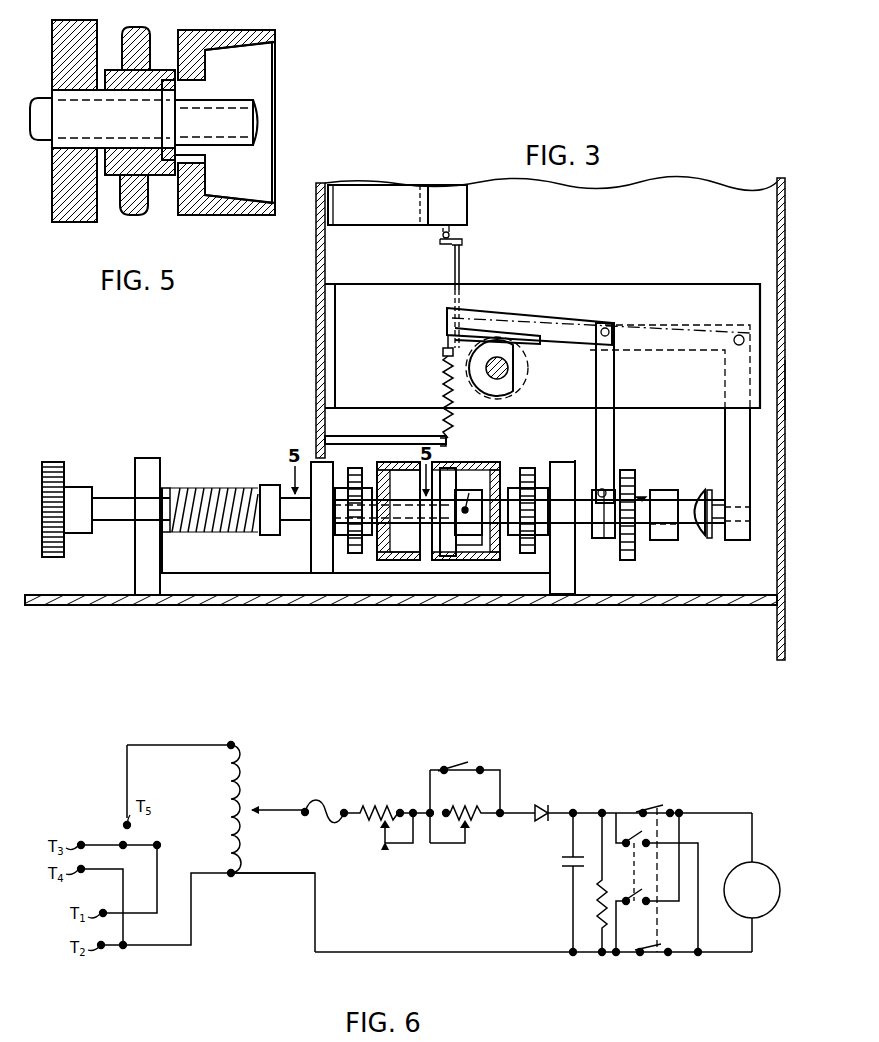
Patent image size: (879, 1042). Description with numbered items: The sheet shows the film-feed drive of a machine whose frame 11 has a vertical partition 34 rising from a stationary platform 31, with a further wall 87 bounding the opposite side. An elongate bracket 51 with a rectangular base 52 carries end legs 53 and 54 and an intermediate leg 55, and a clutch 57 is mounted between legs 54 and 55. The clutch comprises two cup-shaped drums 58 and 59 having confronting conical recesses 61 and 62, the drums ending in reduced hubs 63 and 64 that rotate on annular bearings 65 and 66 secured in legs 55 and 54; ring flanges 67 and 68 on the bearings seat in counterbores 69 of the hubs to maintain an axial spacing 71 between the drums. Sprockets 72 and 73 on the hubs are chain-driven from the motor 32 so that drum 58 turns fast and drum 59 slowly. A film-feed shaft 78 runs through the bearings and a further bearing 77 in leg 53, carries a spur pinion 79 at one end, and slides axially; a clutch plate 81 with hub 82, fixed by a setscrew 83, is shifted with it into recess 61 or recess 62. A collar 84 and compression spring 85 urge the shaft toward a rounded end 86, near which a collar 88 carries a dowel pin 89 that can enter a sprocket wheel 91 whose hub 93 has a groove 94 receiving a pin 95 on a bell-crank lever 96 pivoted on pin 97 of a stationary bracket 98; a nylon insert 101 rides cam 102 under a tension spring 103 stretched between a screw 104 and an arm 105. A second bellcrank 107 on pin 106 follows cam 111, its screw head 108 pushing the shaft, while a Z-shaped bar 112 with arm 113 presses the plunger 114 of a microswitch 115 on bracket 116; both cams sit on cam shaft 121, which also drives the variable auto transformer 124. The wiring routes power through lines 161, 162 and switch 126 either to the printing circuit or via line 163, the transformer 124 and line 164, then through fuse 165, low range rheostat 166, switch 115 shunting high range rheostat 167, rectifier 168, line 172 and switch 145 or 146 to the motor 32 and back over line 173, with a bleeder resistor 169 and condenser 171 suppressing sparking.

In FIG. 3, the frame 11 is at (784, 386).
In FIG. 3, the shelf or platform 31 is at (345, 606).
In FIG. 6, the electric motor 32 is at (769, 872).
In FIG. 3, the wall or partition 34 is at (316, 286).
In FIG. 3, the bracket 51 is at (132, 575).
In FIG. 3, the base 52 is at (188, 598).
In FIG. 3, the leg 53 is at (136, 550).
In FIG. 3, the leg 54 is at (575, 573).
In FIG. 5, the leg 55 is at (94, 210).
In FIG. 3, the leg 55 is at (312, 557).
In FIG. 3, the clutch 57 is at (456, 452).
In FIG. 5, the drum member 58 is at (255, 30).
In FIG. 3, the drum member 58 is at (394, 462).
In FIG. 3, the drum member 59 is at (488, 456).
In FIG. 5, the conical recess 61 is at (258, 88).
In FIG. 3, the conical recess 61 is at (406, 546).
In FIG. 3, the conical recess 62 is at (472, 540).
In FIG. 5, the hub portion 63 is at (112, 60).
In FIG. 3, the hub portion 63 is at (354, 470).
In FIG. 3, the hub portion 64 is at (522, 468).
In FIG. 5, the annular bearing 65 is at (102, 131).
In FIG. 3, the annular bearing 65 is at (322, 528).
In FIG. 3, the annular bearing 66 is at (564, 475).
In FIG. 5, the ring flange 67 is at (170, 115).
In FIG. 3, the ring flange 67 is at (366, 531).
In FIG. 3, the ring flange 68 is at (501, 537).
In FIG. 5, the annular recess or counterbore 69 is at (190, 163).
In FIG. 3, the axial spacing 71 is at (447, 557).
In FIG. 5, the sprocket 72 is at (144, 212).
In FIG. 3, the sprocket 72 is at (366, 468).
In FIG. 3, the sprocket 73 is at (540, 470).
In FIG. 3, the bearing 77 is at (147, 494).
In FIG. 3, the film-feed shaft 78 is at (110, 497).
In FIG. 3, the spur pinion 79 is at (58, 470).
In FIG. 3, the friction disk or clutch plate 81 is at (466, 546).
In FIG. 3, the hub portion 82 is at (485, 536).
In FIG. 3, the setscrew 83 is at (470, 493).
In FIG. 3, the collar 84 is at (272, 485).
In FIG. 3, the compression spring 85 is at (208, 488).
In FIG. 3, the rounded end or head 86 is at (700, 536).
In FIG. 3, the housing wall 87 is at (785, 322).
In FIG. 3, the collar 88 is at (666, 540).
In FIG. 3, the dowel pin 89 is at (646, 497).
In FIG. 3, the sprocket wheel 91 is at (632, 478).
In FIG. 3, the hub 93 is at (628, 556).
In FIG. 3, the circumferential groove 94 is at (602, 538).
In FIG. 3, the pin 95 is at (604, 488).
In FIG. 3, the bell-crank lever 96 is at (615, 384).
In FIG. 3, the pin 97 is at (606, 327).
In FIG. 3, the bracket 98 is at (658, 285).
In FIG. 3, the nylon insert 101 is at (515, 326).
In FIG. 3, the cam 102 is at (519, 395).
In FIG. 3, the tension spring 103 is at (443, 380).
In FIG. 3, the screw 104 is at (442, 350).
In FIG. 3, the arm 105 is at (350, 436).
In FIG. 3, the pin 106 is at (739, 334).
In FIG. 3, the bellcrank lever 107 is at (725, 436).
In FIG. 3, the screw head 108 is at (710, 490).
In FIG. 3, the cam 111 is at (528, 360).
In FIG. 3, the switch actuating bar 112 is at (460, 268).
In FIG. 3, the arm 113 is at (462, 241).
In FIG. 3, the plunger 114 is at (443, 235).
In FIG. 3, the microswitch 115 is at (467, 208).
In FIG. 6, the microswitch 115 is at (466, 770).
In FIG. 3, the bracket 116 is at (358, 219).
In FIG. 3, the cam shaft 121 is at (508, 370).
In FIG. 6, the variable auto transformer 124 is at (250, 778).
In FIG. 6, the switch 126 is at (146, 846).
In FIG. 6, the switch 145 is at (639, 907).
In FIG. 6, the switch 146 is at (663, 809).
In FIG. 6, the line 161 is at (123, 893).
In FIG. 6, the line 162 is at (97, 843).
In FIG. 6, the line 163 is at (195, 738).
In FIG. 6, the line 164 is at (191, 912).
In FIG. 6, the fuse 165 is at (323, 805).
In FIG. 6, the low range rheostat 166 is at (385, 810).
In FIG. 6, the high range rheostat 167 is at (478, 824).
In FIG. 6, the rectifier 168 is at (546, 806).
In FIG. 6, the bleeder resistor 169 is at (598, 918).
In FIG. 6, the condenser 171 is at (562, 870).
In FIG. 6, the line 172 is at (590, 812).
In FIG. 6, the line 173 is at (505, 953).